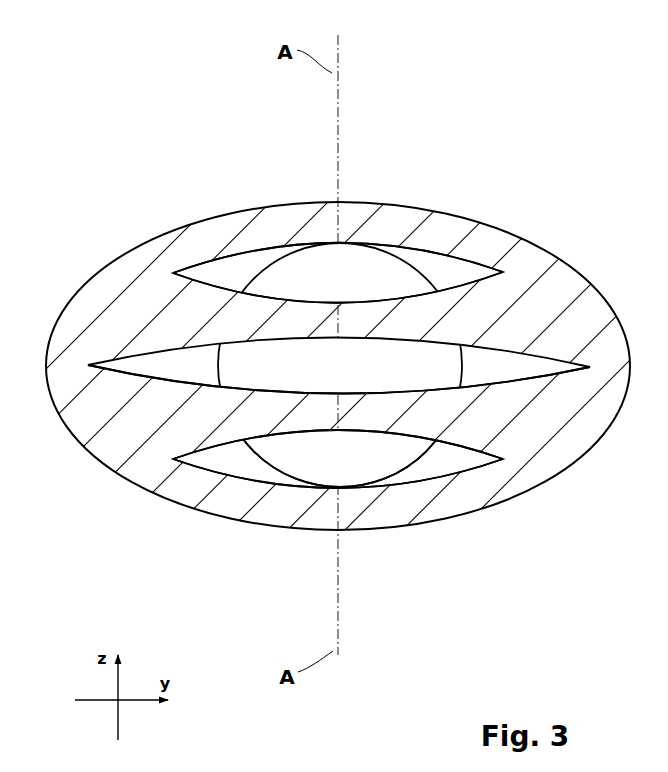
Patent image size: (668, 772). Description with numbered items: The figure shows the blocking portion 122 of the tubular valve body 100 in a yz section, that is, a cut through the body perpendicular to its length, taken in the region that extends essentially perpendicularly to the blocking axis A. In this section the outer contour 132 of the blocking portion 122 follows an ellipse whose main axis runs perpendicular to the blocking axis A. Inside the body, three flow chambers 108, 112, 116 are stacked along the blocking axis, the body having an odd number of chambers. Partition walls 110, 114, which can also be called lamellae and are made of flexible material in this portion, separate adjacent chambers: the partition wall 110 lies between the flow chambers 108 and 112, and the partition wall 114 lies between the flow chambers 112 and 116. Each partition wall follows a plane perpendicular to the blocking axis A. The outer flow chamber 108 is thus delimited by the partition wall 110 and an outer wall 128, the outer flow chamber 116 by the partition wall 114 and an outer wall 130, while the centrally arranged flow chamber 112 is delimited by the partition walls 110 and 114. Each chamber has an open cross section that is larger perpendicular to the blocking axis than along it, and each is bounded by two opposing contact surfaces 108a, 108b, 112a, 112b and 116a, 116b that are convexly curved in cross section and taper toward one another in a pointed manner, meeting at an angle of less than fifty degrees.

The valve body 100 is at (147, 130).
The flow chamber 108 is at (400, 278).
The contact surface 108a is at (245, 259).
The contact surface 108b is at (457, 280).
The partition wall 110 is at (418, 500).
The flow chamber 112 is at (310, 358).
The contact surface 112a is at (288, 420).
The contact surface 112b is at (372, 386).
The partition wall 114 is at (362, 418).
The flow chamber 116 is at (392, 458).
The contact surface 116a is at (212, 457).
The contact surface 116b is at (257, 475).
The blocking portion 122 is at (575, 552).
The outer wall 128 is at (447, 233).
The outer wall 130 is at (420, 482).
The outer contour 132 is at (122, 248).